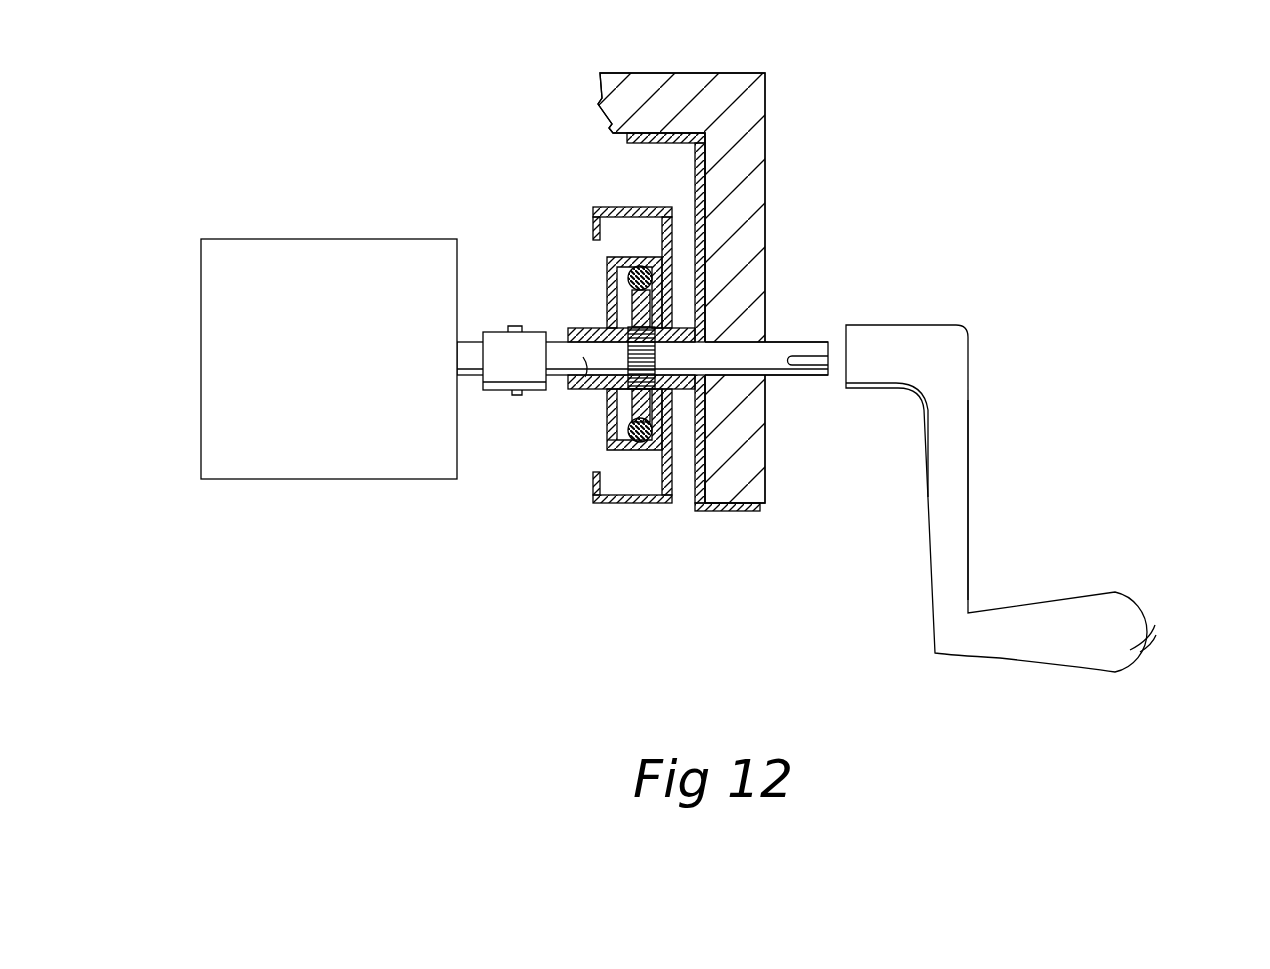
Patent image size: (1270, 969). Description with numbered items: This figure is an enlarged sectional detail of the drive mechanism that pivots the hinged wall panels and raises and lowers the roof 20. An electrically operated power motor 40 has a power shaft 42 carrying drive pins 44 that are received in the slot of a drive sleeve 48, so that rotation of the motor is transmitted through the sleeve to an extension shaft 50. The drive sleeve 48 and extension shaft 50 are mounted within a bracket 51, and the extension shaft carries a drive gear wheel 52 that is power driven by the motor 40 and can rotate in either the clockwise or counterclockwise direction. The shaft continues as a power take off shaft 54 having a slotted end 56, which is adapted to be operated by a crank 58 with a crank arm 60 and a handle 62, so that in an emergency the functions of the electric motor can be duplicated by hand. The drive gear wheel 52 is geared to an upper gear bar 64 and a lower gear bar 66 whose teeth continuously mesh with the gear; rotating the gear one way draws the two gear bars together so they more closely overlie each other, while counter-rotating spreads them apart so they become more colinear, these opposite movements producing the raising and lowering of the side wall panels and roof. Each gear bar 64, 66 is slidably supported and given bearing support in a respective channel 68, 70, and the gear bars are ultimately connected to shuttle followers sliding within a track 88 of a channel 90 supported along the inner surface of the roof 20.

The roof 20 is at (688, 72).
The power motor 40 is at (285, 464).
The power shaft 42 is at (518, 396).
The drive pins 44 is at (467, 340).
The drive sleeve 48 is at (486, 384).
The extension shaft 50 is at (575, 390).
The bracket 51 is at (648, 407).
The drive gear wheel 52 is at (627, 360).
The power take off shaft 54 is at (748, 355).
The slotted end 56 is at (808, 378).
The crank 58 is at (915, 340).
The crank arm 60 is at (965, 478).
The handle 62 is at (1123, 602).
The upper gear bar 64 is at (660, 305).
The lower gear bar 66 is at (660, 405).
The channel 68 is at (607, 275).
The channel 70 is at (607, 413).
The track 88 is at (615, 485).
The channel 90 is at (703, 165).